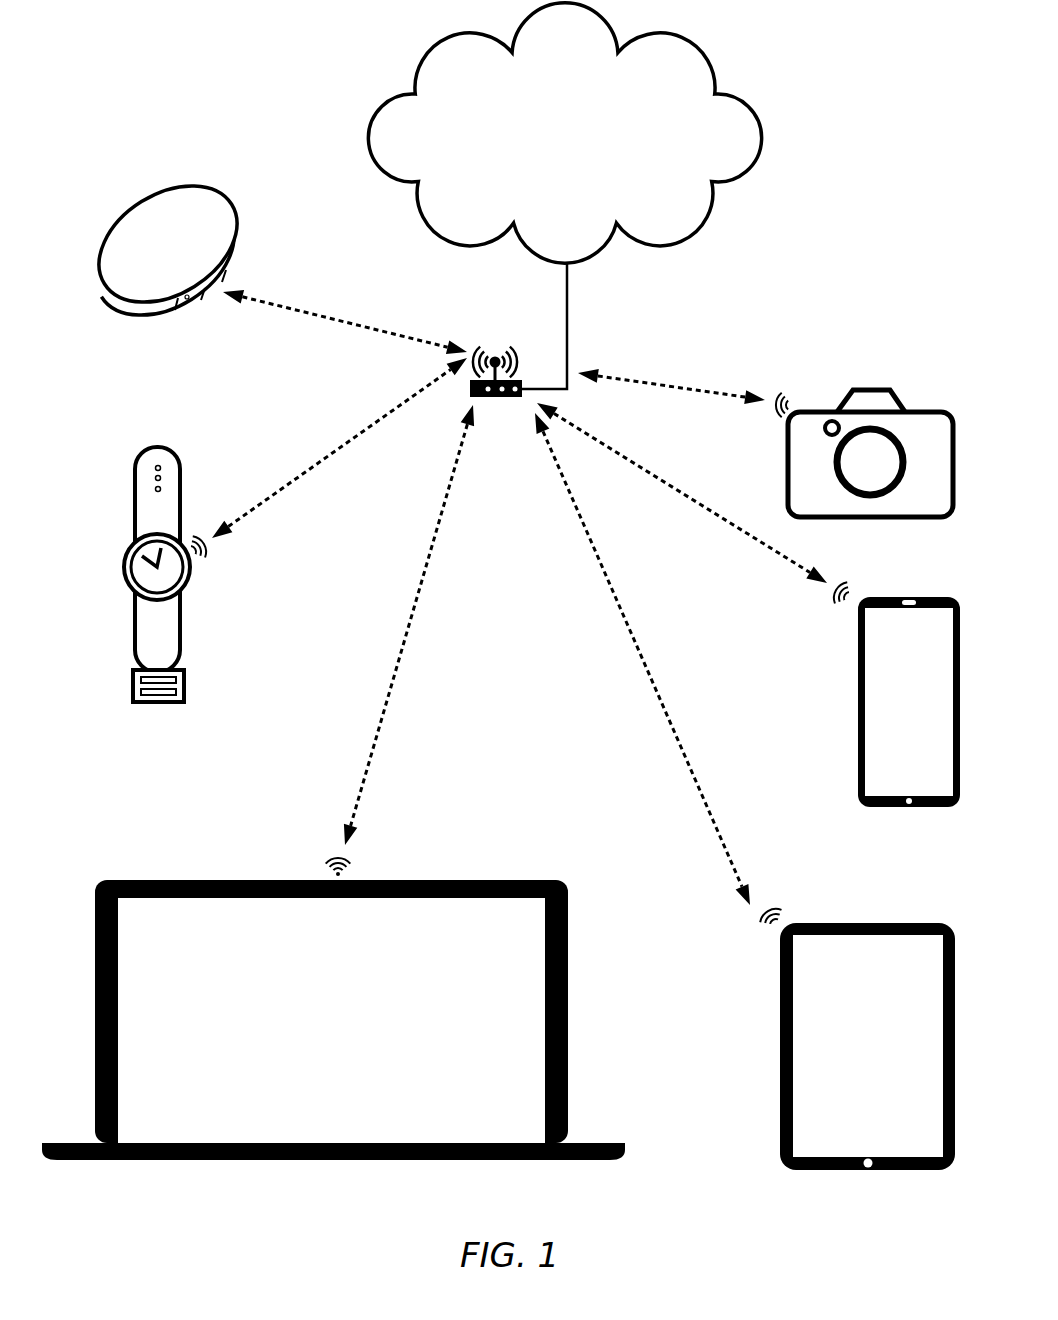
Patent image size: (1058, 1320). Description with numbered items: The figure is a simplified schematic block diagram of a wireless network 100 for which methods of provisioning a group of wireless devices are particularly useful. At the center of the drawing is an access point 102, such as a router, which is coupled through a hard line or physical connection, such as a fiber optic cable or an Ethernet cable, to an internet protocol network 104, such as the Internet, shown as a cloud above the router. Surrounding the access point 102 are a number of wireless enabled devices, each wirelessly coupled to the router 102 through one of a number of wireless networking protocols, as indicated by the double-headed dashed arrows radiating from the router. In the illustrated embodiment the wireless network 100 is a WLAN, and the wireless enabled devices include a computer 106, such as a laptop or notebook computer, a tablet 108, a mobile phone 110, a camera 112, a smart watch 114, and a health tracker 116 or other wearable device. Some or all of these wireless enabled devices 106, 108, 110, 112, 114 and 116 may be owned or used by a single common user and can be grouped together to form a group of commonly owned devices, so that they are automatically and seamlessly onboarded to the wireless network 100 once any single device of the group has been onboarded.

The wireless network 100 is at (501, 586).
The access point 102 is at (497, 399).
The internet protocol network 104 is at (564, 133).
The computer 106 is at (333, 1009).
The tablet 108 is at (856, 1037).
The mobile phone 110 is at (895, 693).
The camera 112 is at (866, 389).
The smart watch 114 is at (153, 447).
The health tracker 116 is at (118, 299).